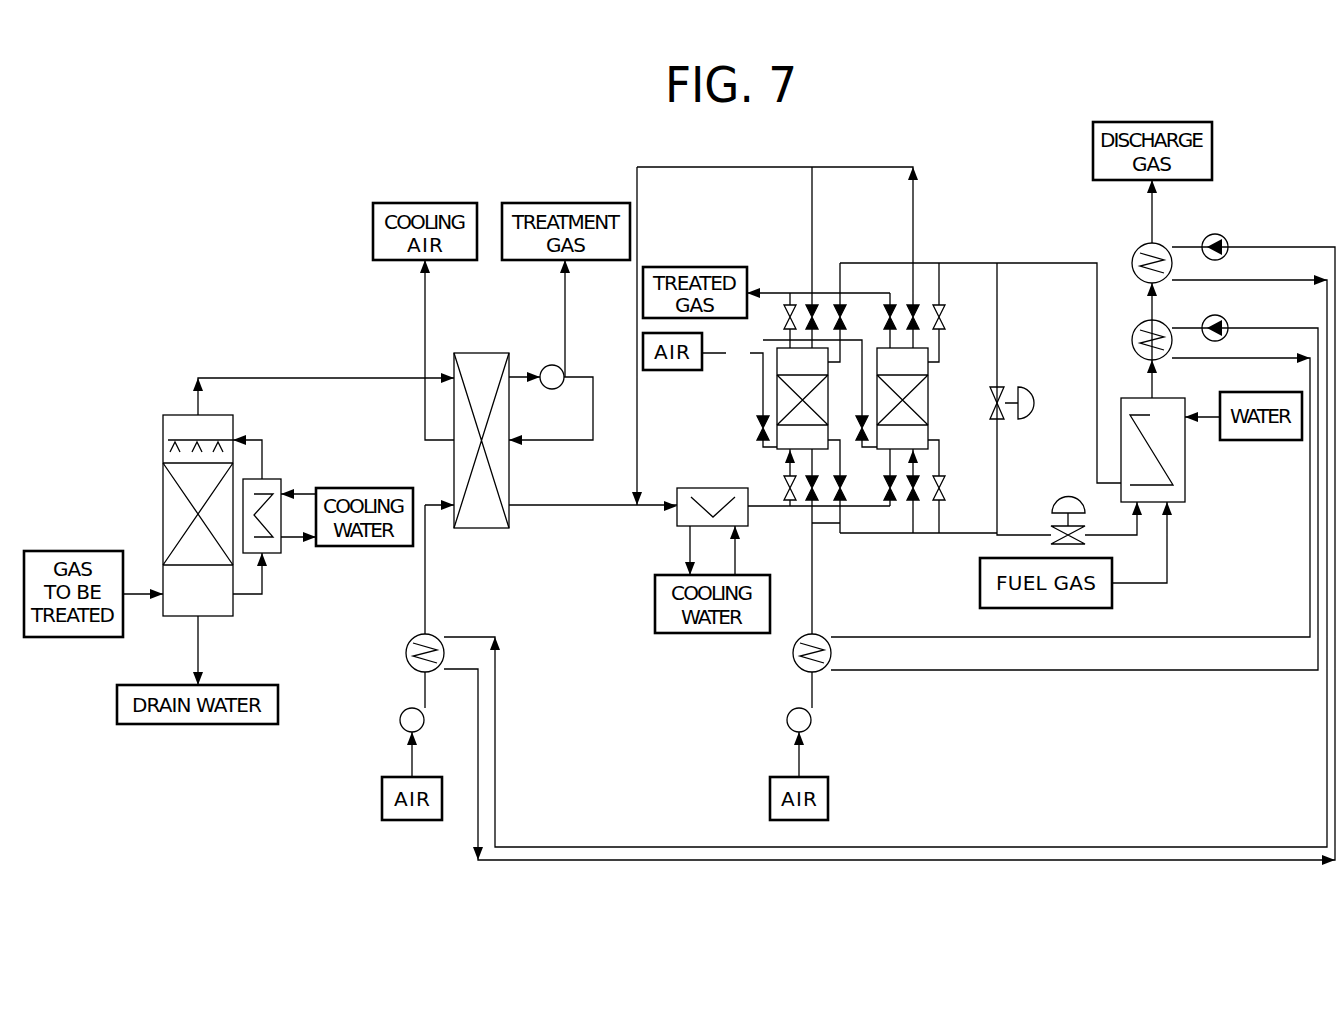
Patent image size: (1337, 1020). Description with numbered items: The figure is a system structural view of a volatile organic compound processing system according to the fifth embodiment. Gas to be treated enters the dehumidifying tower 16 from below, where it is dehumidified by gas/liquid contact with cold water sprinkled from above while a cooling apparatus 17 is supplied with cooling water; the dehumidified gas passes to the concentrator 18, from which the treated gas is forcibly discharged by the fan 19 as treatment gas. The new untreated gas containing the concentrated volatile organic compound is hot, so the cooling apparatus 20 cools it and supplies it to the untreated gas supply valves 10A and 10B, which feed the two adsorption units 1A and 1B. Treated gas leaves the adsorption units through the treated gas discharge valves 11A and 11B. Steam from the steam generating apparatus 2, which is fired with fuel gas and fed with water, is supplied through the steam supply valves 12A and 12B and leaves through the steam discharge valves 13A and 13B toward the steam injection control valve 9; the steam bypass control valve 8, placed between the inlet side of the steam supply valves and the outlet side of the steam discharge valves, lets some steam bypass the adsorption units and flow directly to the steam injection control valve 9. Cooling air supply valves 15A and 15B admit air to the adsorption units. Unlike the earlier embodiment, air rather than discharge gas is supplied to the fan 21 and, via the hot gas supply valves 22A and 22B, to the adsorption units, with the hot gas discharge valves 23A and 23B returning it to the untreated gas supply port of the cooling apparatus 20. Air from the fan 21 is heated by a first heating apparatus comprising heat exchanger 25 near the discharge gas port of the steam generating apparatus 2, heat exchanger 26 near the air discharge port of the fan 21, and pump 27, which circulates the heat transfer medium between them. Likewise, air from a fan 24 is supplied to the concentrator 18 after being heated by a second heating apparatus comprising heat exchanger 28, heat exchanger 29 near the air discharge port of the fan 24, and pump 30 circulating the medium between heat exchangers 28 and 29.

The steam generating apparatus 2 is at (1185, 467).
The steam bypass control valve 8 is at (1034, 403).
The steam injection control valve 9 is at (1068, 500).
The adsorption unit 1A is at (777, 396).
The adsorption unit 1B is at (928, 395).
The untreated gas supply valve 10A is at (784, 488).
The untreated gas supply valve 10B is at (892, 501).
The treated gas discharge valve 11A is at (789, 305).
The treated gas discharge valve 11B is at (878, 303).
The steam supply valve 12A is at (828, 300).
The steam supply valve 12B is at (950, 313).
The steam discharge valve 13A is at (826, 506).
The steam discharge valve 13B is at (945, 487).
The cooling air supply valve 15A is at (757, 430).
The cooling air supply valve 15B is at (853, 440).
The dehumidifying tower 16 is at (163, 511).
The cooling apparatus 17 is at (265, 479).
The concentrator 18 is at (490, 528).
The fan 19 is at (544, 367).
The cooling apparatus 20 is at (683, 526).
The fan 21 is at (787, 720).
The hot gas supply valve 22A is at (812, 501).
The hot gas supply valve 22B is at (915, 462).
The hot gas discharge valve 23A is at (807, 305).
The hot gas discharge valve 23B is at (928, 307).
The fan 24 is at (400, 720).
The heat exchanger 25 is at (1134, 330).
The heat exchanger 26 is at (793, 660).
The pump 27 is at (1228, 325).
The heat exchanger 28 is at (1134, 250).
The heat exchanger 29 is at (406, 660).
The pump 30 is at (1228, 243).